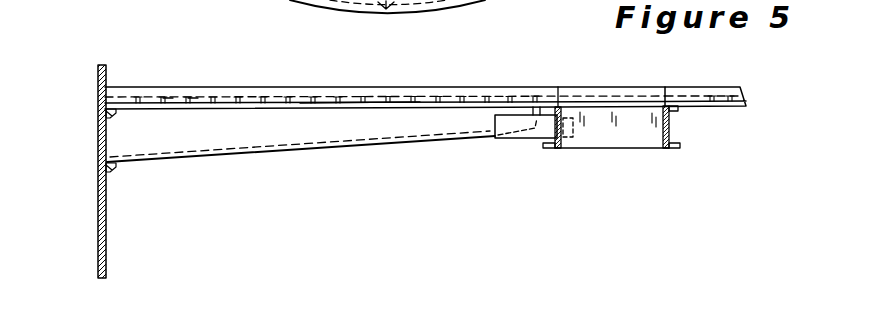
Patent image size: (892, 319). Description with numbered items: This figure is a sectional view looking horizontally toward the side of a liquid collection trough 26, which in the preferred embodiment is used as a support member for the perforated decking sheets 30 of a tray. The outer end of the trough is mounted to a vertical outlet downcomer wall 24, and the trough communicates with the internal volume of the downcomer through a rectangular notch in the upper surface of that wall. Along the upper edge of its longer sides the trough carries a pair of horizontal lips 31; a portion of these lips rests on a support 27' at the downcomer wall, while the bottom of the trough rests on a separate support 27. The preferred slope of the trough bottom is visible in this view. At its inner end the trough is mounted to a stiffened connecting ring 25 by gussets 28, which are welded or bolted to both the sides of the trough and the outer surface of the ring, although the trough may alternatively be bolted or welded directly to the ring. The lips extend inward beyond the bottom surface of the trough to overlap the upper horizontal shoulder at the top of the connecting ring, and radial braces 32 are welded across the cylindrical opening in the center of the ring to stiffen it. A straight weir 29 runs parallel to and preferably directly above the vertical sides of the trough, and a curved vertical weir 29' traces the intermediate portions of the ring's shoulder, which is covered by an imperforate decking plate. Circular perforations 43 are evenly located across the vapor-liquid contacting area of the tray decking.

The vertical outlet downcomer wall 24 is at (100, 228).
The stiffened connecting ring 25 is at (674, 150).
The liquid collection trough 26 is at (272, 155).
The support 27 is at (136, 187).
The support 27' is at (138, 130).
The gussets 28 is at (520, 142).
The straight weir 29 is at (385, 77).
The curved vertical weir 29' is at (691, 76).
The perforated decking sheets 30 is at (543, 97).
The horizontal lips 31 is at (393, 107).
The radial braces 32 is at (628, 138).
The circular perforations 43 is at (188, 98).